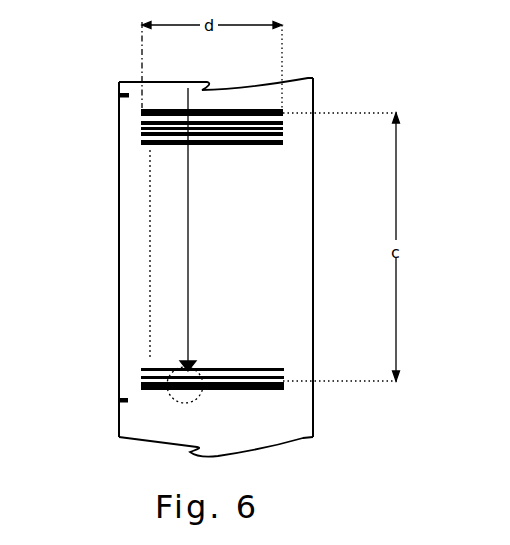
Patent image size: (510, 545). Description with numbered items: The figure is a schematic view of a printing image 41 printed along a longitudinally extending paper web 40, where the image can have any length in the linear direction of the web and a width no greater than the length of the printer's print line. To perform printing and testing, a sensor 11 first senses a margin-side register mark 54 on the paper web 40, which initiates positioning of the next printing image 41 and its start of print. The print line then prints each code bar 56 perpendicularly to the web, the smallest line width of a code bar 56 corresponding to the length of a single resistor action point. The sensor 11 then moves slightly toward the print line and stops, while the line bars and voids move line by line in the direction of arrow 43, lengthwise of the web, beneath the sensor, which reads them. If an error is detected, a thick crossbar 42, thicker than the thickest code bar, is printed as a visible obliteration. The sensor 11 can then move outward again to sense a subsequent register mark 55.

The sensor 11 is at (178, 402).
The paper web 40 is at (308, 125).
The printing image 41 is at (217, 219).
The thick crossbar 42 is at (285, 389).
The arrow 43 is at (188, 266).
The register mark 54 is at (119, 95).
The register mark 55 is at (118, 401).
The code bar 56 is at (283, 124).